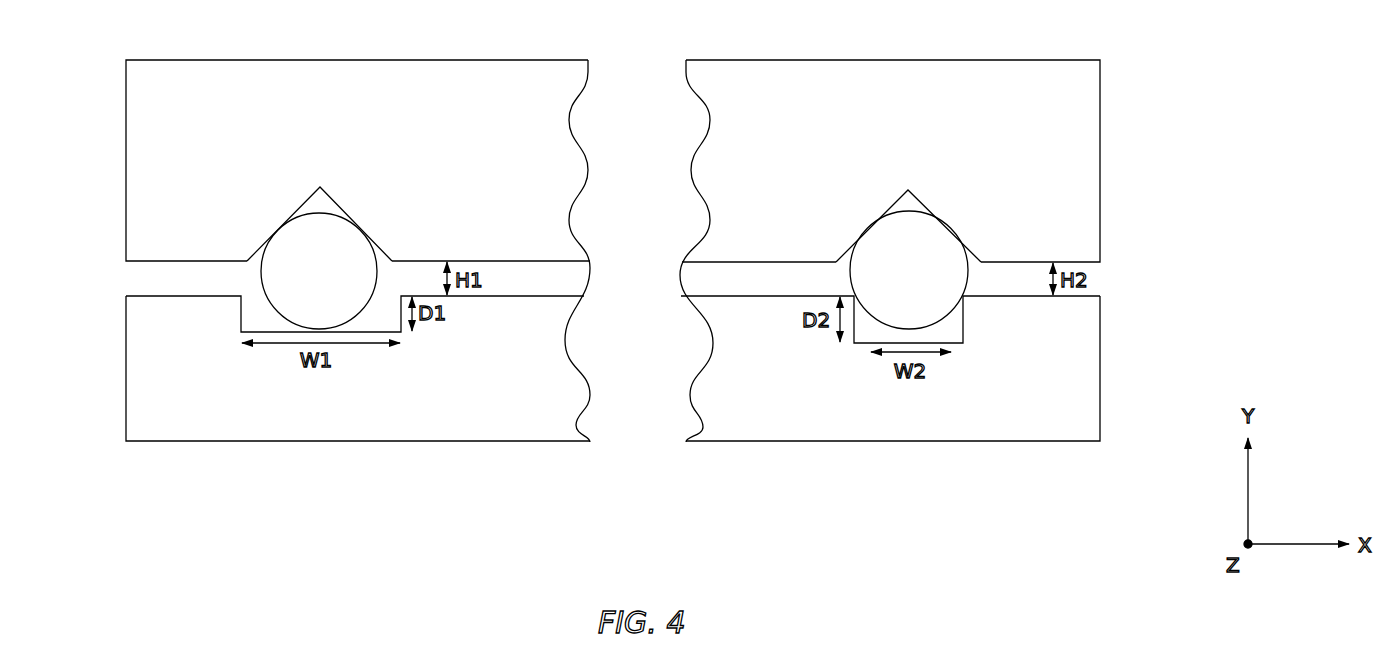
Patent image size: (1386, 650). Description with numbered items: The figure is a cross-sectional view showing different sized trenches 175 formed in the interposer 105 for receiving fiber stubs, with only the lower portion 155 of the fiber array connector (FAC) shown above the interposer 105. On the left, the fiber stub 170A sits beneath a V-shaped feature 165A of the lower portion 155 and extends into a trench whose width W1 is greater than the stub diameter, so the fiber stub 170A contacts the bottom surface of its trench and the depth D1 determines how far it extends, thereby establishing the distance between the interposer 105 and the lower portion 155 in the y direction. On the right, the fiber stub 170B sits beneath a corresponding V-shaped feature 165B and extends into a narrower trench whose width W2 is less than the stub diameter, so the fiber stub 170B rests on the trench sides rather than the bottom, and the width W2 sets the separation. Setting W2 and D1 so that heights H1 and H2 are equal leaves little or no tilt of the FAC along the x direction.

The lower portion of the FAC 155 is at (193, 59).
The interposer 105 is at (194, 442).
The trenches 175 is at (250, 295).
The V-shaped notch 165A is at (282, 216).
The V-shaped notch 165B is at (871, 212).
The fiber stub 170A is at (350, 287).
The fiber stub 170B is at (882, 285).